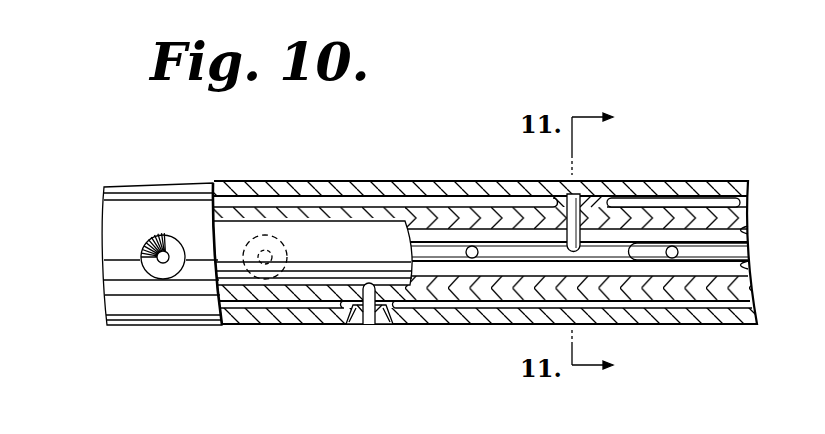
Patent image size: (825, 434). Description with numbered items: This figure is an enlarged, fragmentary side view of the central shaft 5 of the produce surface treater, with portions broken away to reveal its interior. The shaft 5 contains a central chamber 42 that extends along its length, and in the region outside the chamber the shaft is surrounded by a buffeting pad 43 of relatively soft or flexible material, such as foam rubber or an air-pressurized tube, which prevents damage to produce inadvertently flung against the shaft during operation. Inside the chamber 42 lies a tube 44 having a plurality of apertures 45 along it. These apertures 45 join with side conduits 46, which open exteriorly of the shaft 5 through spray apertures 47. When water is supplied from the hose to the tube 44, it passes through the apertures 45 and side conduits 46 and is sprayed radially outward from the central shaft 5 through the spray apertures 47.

The central shaft 5 is at (343, 232).
The central chamber 42 is at (746, 232).
The buffeting pad 43 is at (143, 187).
The tube 44 is at (739, 265).
The apertures 45 is at (673, 254).
The side conduits 46 is at (572, 196).
The spray apertures 47 is at (360, 308).